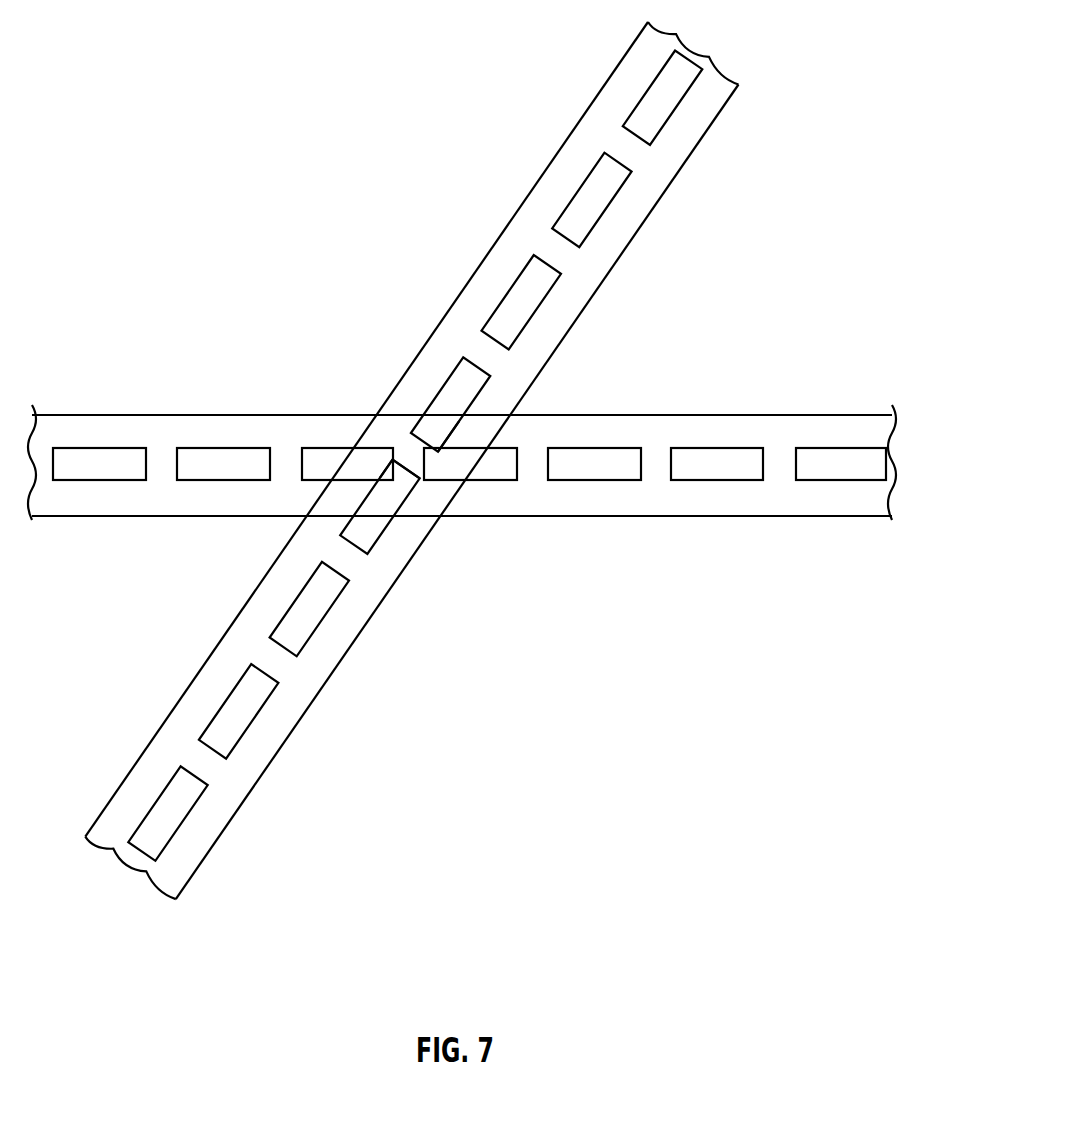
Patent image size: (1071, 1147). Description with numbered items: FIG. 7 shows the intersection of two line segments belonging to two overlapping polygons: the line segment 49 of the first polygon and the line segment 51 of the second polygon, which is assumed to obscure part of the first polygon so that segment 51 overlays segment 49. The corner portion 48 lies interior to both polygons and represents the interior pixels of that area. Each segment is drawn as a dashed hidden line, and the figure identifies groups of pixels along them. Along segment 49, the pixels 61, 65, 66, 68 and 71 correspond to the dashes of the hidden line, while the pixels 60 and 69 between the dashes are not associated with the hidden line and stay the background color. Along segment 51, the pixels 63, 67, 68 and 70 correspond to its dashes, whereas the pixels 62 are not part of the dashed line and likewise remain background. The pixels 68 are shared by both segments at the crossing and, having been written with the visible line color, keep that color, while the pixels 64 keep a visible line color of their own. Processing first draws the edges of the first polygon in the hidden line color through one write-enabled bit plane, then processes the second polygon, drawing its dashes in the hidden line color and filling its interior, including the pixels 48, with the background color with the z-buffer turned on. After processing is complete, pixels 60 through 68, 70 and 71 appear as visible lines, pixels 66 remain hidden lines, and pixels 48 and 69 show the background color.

The corner portion 48 is at (739, 310).
The line segment 49 is at (747, 518).
The line segment 51 is at (575, 132).
The pixels 60 is at (160, 433).
The pixels 61 is at (221, 456).
The pixels 62 is at (470, 337).
The pixels 63 is at (248, 678).
The pixels 64 is at (394, 432).
The pixels 65 is at (323, 458).
The pixels 66 is at (592, 461).
The pixels 67 is at (397, 490).
The pixels 68 is at (405, 492).
The pixels 69 is at (618, 490).
The pixels 70 is at (530, 283).
The pixels 71 is at (450, 460).